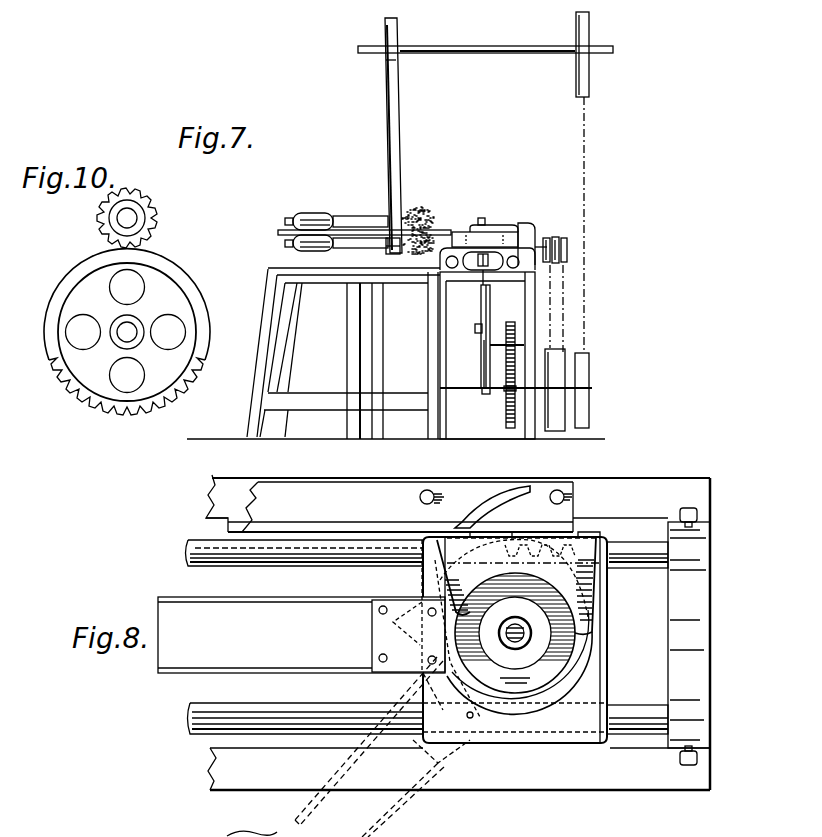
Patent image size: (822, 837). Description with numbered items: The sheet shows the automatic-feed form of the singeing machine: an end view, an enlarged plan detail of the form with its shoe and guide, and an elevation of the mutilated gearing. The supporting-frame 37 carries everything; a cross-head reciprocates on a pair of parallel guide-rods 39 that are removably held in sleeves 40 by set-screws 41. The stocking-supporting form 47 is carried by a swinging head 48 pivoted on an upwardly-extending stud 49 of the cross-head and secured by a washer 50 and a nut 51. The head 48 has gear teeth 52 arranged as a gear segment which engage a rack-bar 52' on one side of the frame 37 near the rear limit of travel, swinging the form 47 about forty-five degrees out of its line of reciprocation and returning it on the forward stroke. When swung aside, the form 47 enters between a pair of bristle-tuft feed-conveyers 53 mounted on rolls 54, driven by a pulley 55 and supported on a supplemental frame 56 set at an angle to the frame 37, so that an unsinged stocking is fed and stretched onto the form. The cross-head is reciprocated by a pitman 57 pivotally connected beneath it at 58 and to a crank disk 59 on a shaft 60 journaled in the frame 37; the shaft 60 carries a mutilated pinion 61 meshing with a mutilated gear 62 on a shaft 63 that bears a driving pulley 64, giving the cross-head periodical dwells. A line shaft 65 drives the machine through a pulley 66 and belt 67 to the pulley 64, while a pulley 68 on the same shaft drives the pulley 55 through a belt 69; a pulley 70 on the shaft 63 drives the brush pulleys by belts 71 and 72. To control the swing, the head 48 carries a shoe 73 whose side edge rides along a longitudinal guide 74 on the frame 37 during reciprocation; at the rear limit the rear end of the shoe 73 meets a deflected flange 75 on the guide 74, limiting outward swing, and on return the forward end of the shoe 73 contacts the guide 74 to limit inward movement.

In FIG. 7, the supporting-frame 37 is at (430, 350).
In FIG. 8, the supporting-frame 37 is at (210, 506).
In FIG. 8, the guide-rods 39 is at (237, 550).
In FIG. 8, the sleeves 40 is at (703, 553).
In FIG. 8, the set-screws 41 is at (698, 513).
In FIG. 7, the stocking-supporting form 47 is at (278, 233).
In FIG. 8, the stocking-supporting form 47 is at (289, 600).
In FIG. 8, the swinging head 48 is at (515, 633).
In FIG. 7, the stud 49 is at (495, 238).
In FIG. 8, the washer 50 is at (519, 662).
In FIG. 8, the nut 51 is at (510, 640).
In FIG. 8, the gear teeth 52 is at (515, 627).
In FIG. 8, the rack-bar 52' is at (545, 516).
In FIG. 7, the feed-conveyers 53 is at (360, 240).
In FIG. 7, the rolls 54 is at (314, 240).
In FIG. 7, the pulley 55 is at (388, 252).
In FIG. 7, the supplemental frame 56 is at (343, 353).
In FIG. 7, the pitman 57 is at (481, 306).
In FIG. 7, the pivotal connection 58 is at (486, 270).
In FIG. 7, the crank disk 59 is at (482, 366).
In FIG. 7, the shaft 60 is at (465, 329).
In FIG. 7, the mutilated pinion 61 is at (509, 330).
In FIG. 7, the mutilated gear 62 is at (506, 404).
In FIG. 7, the shaft 63 is at (464, 390).
In FIG. 7, the driving pulley 64 is at (585, 414).
In FIG. 7, the line shaft 65 is at (521, 46).
In FIG. 7, the pulley 66 is at (589, 79).
In FIG. 7, the belt 67 is at (585, 201).
In FIG. 7, the pulley 68 is at (387, 75).
In FIG. 7, the belt 69 is at (400, 152).
In FIG. 7, the pulley 70 is at (560, 369).
In FIG. 7, the belt 71 is at (564, 304).
In FIG. 7, the belt 72 is at (551, 283).
In FIG. 7, the shoe 73 is at (484, 223).
In FIG. 8, the shoe 73 is at (447, 556).
In FIG. 8, the guide 74 is at (370, 522).
In FIG. 7, the deflected flange 75 is at (530, 226).
In FIG. 8, the deflected flange 75 is at (512, 490).